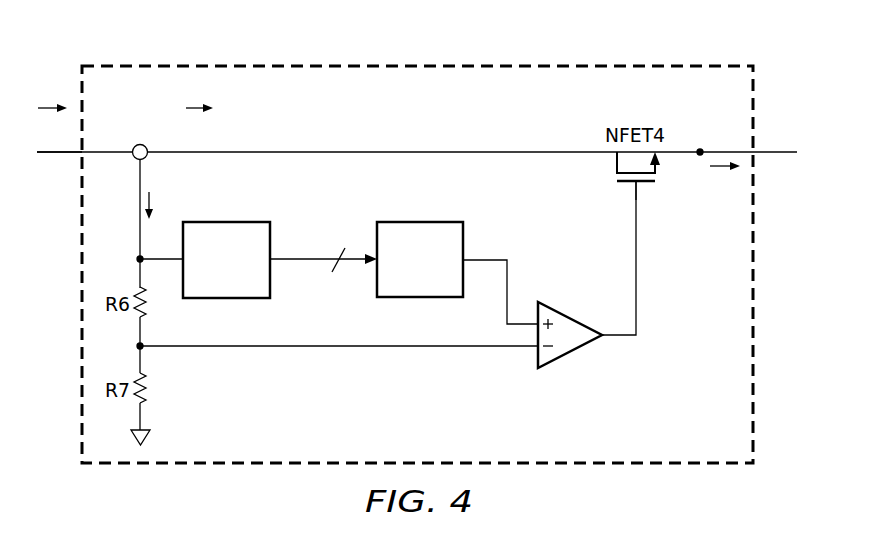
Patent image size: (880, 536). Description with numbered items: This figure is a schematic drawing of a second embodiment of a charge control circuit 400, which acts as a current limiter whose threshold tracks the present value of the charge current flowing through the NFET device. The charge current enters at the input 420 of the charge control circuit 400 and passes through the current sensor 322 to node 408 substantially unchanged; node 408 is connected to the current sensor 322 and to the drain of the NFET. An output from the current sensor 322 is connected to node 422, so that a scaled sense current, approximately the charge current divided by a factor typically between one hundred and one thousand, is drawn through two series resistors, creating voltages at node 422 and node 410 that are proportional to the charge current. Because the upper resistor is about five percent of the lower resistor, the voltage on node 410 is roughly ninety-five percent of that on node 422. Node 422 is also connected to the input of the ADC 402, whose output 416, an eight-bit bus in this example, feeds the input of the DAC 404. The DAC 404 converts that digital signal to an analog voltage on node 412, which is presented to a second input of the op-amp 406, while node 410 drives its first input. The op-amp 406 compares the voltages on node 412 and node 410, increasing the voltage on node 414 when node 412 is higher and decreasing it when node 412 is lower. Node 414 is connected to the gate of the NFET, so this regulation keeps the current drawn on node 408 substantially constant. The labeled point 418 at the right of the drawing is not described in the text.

The charge control circuit 400 is at (344, 61).
The current sensor 322 is at (143, 146).
The node 408 is at (328, 151).
The input 420 is at (63, 153).
The node 422 is at (138, 257).
The ADC 402 is at (220, 221).
The output of the ADC 416 is at (308, 262).
The DAC 404 is at (420, 221).
The node 412 is at (483, 258).
The node 410 is at (225, 348).
The op-amp 406 is at (568, 355).
The node 414 is at (637, 250).
The output node 418 is at (701, 149).